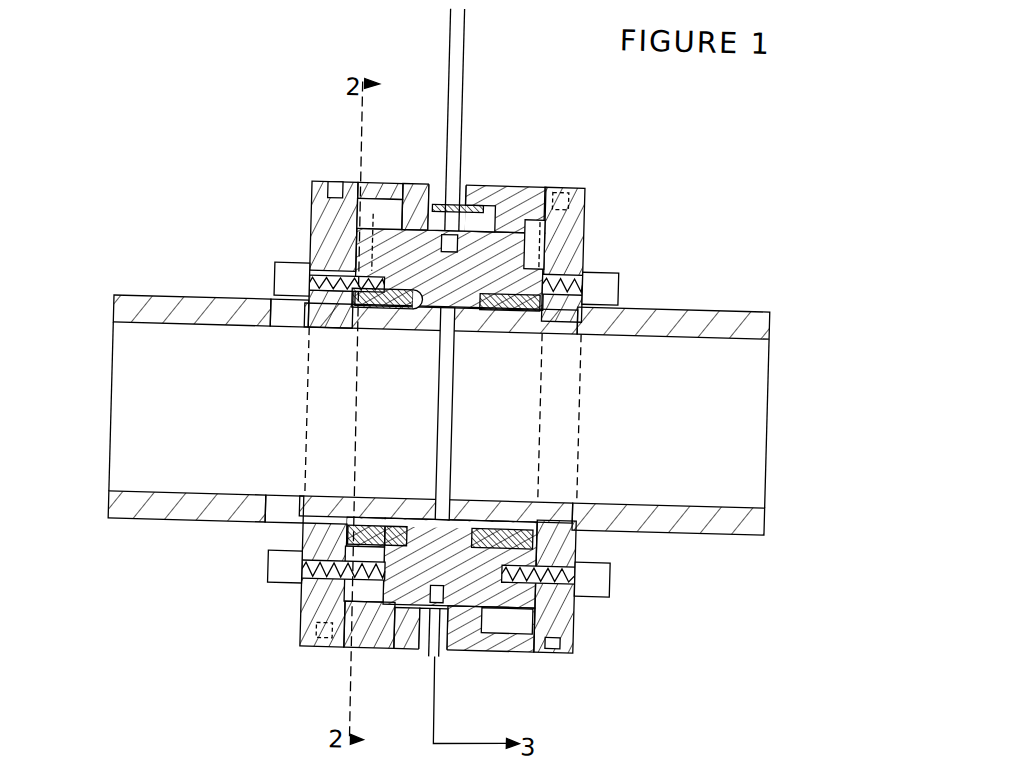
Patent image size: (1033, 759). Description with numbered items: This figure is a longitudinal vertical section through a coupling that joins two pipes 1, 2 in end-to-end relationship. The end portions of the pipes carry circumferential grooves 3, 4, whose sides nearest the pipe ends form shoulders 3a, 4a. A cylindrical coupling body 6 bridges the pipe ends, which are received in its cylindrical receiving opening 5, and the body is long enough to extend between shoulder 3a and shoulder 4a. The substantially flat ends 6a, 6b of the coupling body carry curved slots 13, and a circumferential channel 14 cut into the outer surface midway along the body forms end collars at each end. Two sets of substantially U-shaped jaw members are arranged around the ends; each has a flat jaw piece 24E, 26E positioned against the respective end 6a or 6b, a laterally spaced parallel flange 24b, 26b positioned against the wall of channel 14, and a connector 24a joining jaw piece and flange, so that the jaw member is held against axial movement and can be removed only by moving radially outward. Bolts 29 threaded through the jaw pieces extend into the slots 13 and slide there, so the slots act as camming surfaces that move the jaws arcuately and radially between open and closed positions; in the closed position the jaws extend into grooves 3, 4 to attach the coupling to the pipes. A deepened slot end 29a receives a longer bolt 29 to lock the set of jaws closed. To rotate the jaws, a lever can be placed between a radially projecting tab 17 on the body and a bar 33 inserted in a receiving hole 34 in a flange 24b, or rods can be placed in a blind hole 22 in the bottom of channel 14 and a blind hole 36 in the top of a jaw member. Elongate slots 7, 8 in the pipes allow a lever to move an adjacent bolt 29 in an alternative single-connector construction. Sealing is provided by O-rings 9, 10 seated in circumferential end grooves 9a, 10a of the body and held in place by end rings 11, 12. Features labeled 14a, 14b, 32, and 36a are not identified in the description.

The pipe 1 is at (146, 516).
The pipe 2 is at (693, 498).
The circumferential groove 3 is at (308, 510).
The shoulder 3a is at (356, 524).
The circumferential groove 4 is at (586, 301).
The shoulder 4a is at (521, 306).
The cylindrical receiving opening 5 is at (447, 411).
The coupling body 6 is at (475, 178).
The end of coupling body 6a is at (403, 523).
The end of coupling body 6b is at (523, 520).
The elongate slot 7 is at (302, 302).
The elongate slot 8 is at (598, 515).
The O-ring seal 9 is at (402, 300).
The circumferential end groove 9a is at (423, 300).
The O-ring seal 10 is at (477, 298).
The circumferential end groove 10a is at (496, 520).
The end ring 11 is at (376, 318).
The end ring 12 is at (518, 520).
The curved slots 13 is at (364, 232).
The circumferential channel 14 is at (427, 645).
The pin head 14a is at (362, 646).
The pin slot 14b is at (516, 643).
The radially projecting tab 17 is at (437, 178).
The blind hole 22 is at (376, 240).
The connector 24a is at (494, 177).
The flange 24b is at (386, 176).
The flat jaw piece 24E is at (315, 178).
The flange 26b is at (400, 653).
The flat jaw piece 26E is at (339, 626).
The bolts 29 is at (596, 259).
The deepened slot end 29a is at (354, 642).
The groove 32 is at (553, 324).
The bar 33 is at (459, 178).
The receiving hole 34 is at (407, 179).
The blind hole 36 is at (333, 177).
The retaining bolt head 36a is at (575, 176).